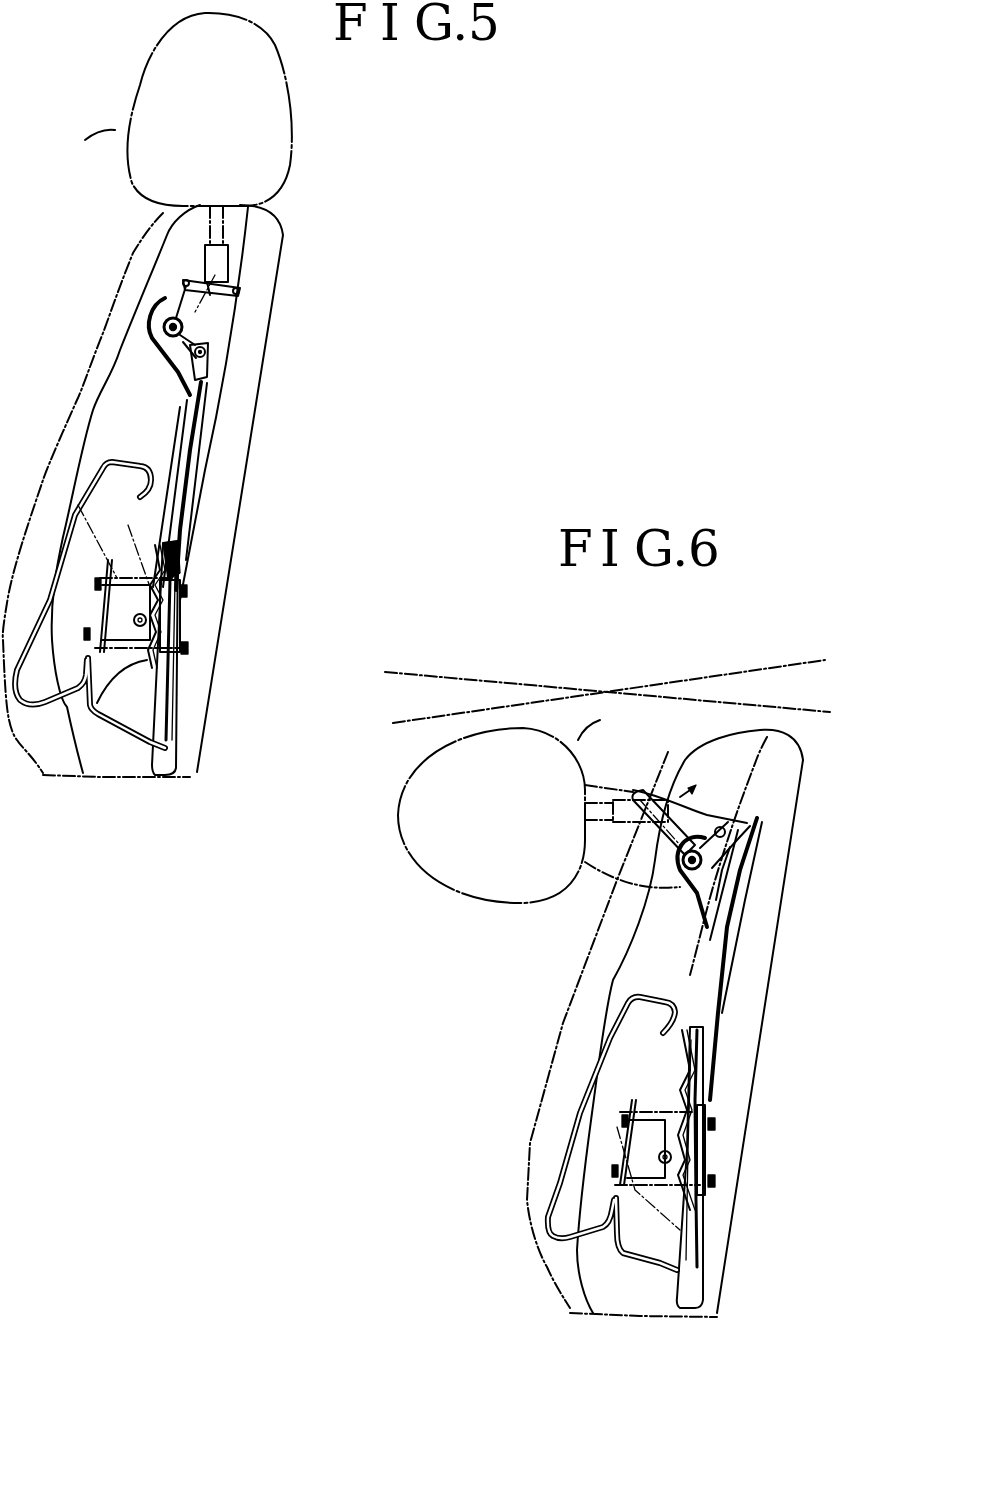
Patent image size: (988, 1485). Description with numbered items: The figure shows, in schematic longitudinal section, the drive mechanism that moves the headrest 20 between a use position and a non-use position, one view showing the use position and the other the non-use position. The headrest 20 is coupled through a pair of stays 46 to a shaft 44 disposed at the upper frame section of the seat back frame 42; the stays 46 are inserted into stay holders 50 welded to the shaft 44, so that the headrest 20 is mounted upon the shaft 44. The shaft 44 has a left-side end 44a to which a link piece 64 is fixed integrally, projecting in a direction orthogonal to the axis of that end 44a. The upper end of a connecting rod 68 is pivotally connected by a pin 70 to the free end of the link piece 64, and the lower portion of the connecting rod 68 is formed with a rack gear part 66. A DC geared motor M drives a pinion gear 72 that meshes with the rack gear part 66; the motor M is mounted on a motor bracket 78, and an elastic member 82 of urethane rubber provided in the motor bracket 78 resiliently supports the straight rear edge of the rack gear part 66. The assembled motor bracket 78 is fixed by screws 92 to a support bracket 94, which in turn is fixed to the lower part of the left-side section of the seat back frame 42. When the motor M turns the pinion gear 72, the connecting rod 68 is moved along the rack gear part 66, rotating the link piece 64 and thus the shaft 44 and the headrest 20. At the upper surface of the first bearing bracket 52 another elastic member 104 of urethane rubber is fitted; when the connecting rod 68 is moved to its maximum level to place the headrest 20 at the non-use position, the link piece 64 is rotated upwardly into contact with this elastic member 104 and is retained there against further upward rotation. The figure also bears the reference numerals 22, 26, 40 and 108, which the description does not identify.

In FIG. 5, the headrest 20 is at (296, 105).
In FIG. 6, the headrest 20 is at (437, 872).
In FIG. 5, the seat back 22 is at (253, 400).
In FIG. 6, the seat back 22 is at (783, 907).
In FIG. 6, the rear window line 26 is at (748, 667).
In FIG. 5, the head restraint assembly 40 is at (118, 222).
In FIG. 6, the head restraint assembly 40 is at (557, 957).
In FIG. 5, the seat back frame 42 is at (180, 752).
In FIG. 6, the seat back frame 42 is at (700, 1287).
In FIG. 5, the shaft 44 is at (233, 271).
In FIG. 6, the shaft 44 is at (636, 787).
In FIG. 5, the left-side end of shaft 44a is at (153, 337).
In FIG. 6, the left-side end of shaft 44a is at (684, 862).
In FIG. 5, the stays 46 is at (205, 244).
In FIG. 5, the stay holders 50 is at (229, 246).
In FIG. 5, the first bearing bracket 52 is at (153, 305).
In FIG. 6, the first bearing bracket 52 is at (697, 893).
In FIG. 5, the link piece 64 is at (180, 362).
In FIG. 6, the link piece 64 is at (730, 847).
In FIG. 5, the rack gear part 66 is at (90, 705).
In FIG. 6, the rack gear part 66 is at (680, 1100).
In FIG. 5, the connecting rod 68 is at (195, 455).
In FIG. 6, the connecting rod 68 is at (717, 942).
In FIG. 5, the pin 70 is at (206, 352).
In FIG. 5, the pinion gear 72 is at (103, 607).
In FIG. 6, the pinion gear 72 is at (628, 1143).
In FIG. 5, the motor bracket 78 is at (140, 560).
In FIG. 6, the motor bracket 78 is at (663, 1113).
In FIG. 5, the elastic member 82 is at (175, 640).
In FIG. 5, the screws 92 is at (97, 580).
In FIG. 6, the screws 92 is at (718, 1120).
In FIG. 5, the support bracket 94 is at (105, 580).
In FIG. 6, the support bracket 94 is at (703, 1117).
In FIG. 5, the elastic member 104 is at (183, 282).
In FIG. 6, the elastic member 104 is at (727, 825).
In FIG. 6, the reference line 108 is at (483, 683).
In FIG. 5, the motor M is at (125, 700).